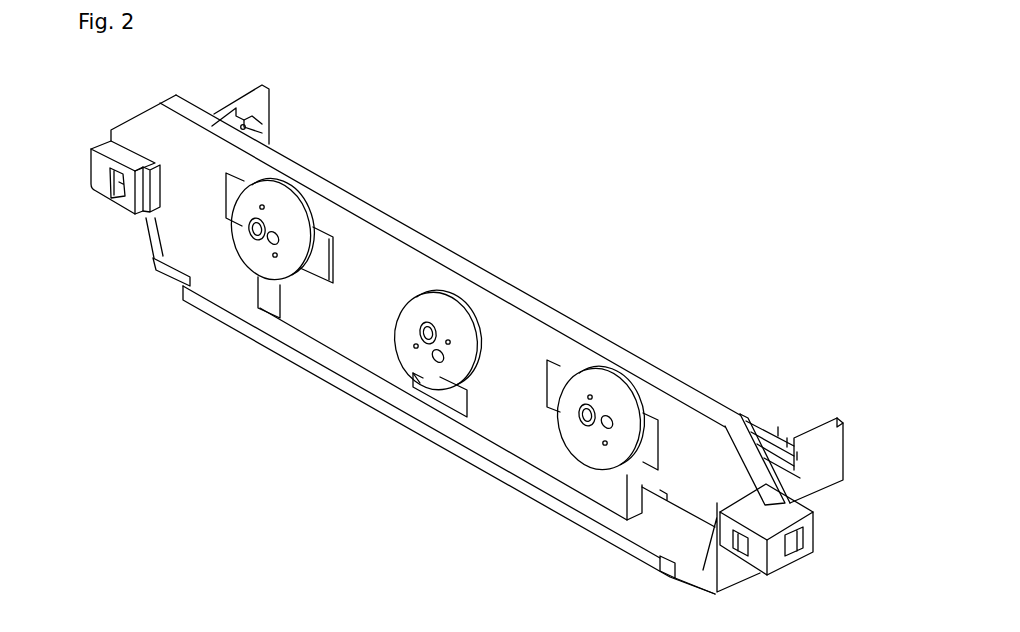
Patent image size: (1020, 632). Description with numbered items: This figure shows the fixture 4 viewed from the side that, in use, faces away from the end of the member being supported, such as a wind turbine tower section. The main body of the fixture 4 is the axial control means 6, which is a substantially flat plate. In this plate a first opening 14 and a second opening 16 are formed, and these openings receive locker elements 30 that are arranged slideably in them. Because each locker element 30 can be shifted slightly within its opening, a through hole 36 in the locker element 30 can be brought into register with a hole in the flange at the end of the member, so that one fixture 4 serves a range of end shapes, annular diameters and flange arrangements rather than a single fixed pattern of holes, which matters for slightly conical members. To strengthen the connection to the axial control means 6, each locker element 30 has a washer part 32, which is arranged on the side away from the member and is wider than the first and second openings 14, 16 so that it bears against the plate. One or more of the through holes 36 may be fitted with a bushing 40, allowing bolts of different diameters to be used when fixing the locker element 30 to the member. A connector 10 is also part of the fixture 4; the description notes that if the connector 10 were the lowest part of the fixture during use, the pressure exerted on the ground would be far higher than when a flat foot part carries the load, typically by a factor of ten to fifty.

The fixture 4 is at (512, 231).
The axial control means 6 is at (375, 305).
The connector 10 is at (130, 197).
The first opening 14 is at (327, 247).
The second opening 16 is at (467, 398).
The locker element 30 is at (262, 250).
The washer part 32 is at (243, 207).
The through hole 36 is at (257, 227).
The bushing 40 is at (588, 425).